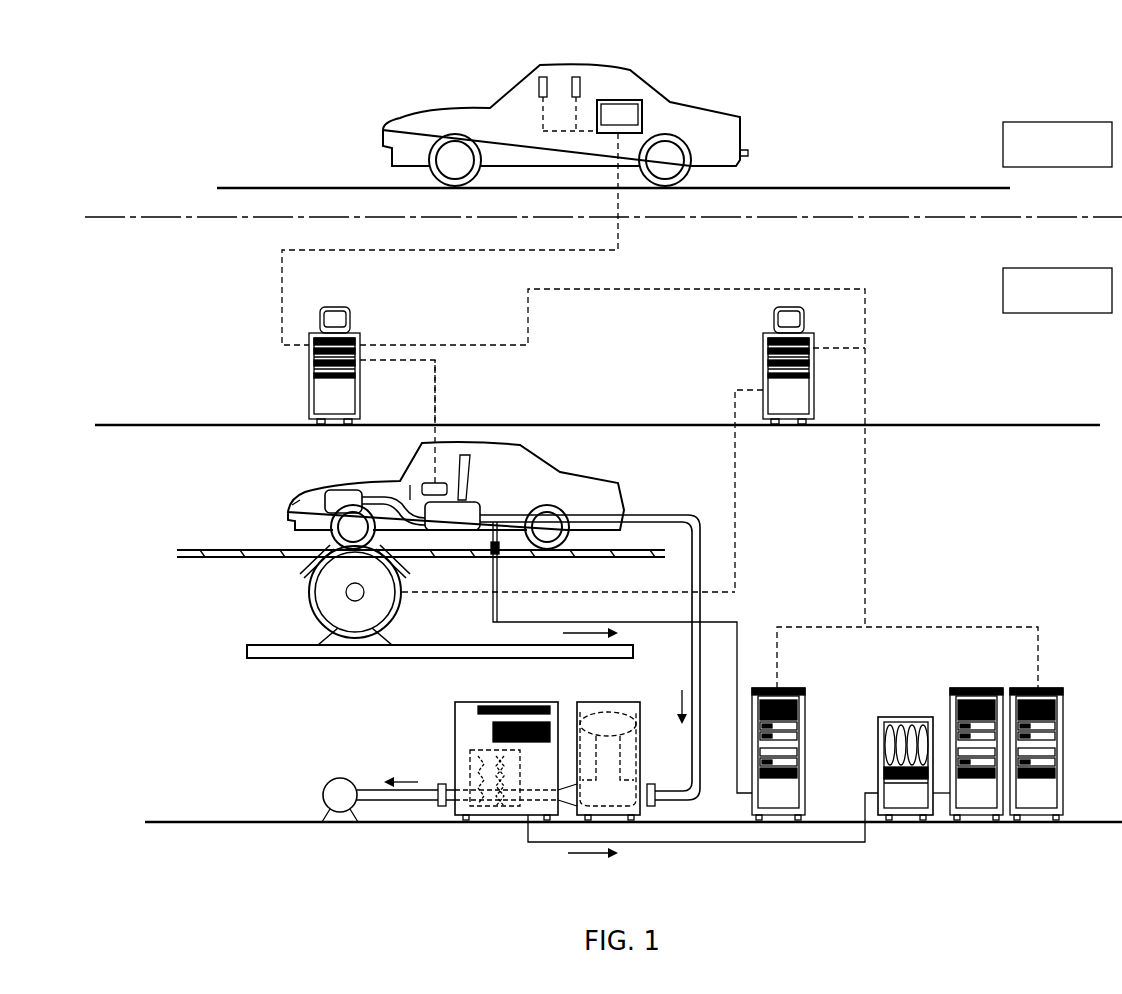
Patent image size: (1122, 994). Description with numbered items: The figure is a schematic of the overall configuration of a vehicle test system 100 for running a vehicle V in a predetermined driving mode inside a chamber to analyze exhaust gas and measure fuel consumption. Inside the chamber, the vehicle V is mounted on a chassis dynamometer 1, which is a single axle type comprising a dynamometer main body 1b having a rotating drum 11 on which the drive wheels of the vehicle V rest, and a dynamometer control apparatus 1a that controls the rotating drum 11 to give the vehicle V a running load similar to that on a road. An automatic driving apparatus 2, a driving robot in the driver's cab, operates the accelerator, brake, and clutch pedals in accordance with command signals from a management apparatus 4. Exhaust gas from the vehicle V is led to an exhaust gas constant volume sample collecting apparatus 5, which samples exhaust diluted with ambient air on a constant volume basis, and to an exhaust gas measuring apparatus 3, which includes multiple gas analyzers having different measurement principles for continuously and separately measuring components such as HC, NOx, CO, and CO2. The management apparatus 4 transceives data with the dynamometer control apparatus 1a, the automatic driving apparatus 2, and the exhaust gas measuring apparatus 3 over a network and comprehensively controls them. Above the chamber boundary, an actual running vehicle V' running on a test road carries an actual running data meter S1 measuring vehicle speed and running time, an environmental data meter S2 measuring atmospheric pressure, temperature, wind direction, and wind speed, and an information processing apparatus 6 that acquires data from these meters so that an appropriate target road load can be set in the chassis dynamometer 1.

The vehicle test system 100 is at (200, 82).
The actual running data meter S1 is at (540, 72).
The environmental data meter S2 is at (576, 75).
The information processing apparatus 6 is at (633, 100).
The actual running vehicle V' is at (585, 125).
The management apparatus 4 is at (309, 378).
The dynamometer control apparatus 1a is at (763, 340).
The automatic driving apparatus 2 is at (422, 490).
The vehicle V is at (472, 493).
The chassis dynamometer 1 is at (456, 601).
The dynamometer main body 1b is at (330, 602).
The rotating drum 11 is at (398, 610).
The exhaust gas measuring apparatus 3 is at (858, 655).
The exhaust gas constant volume sample collecting apparatus 5 is at (442, 728).